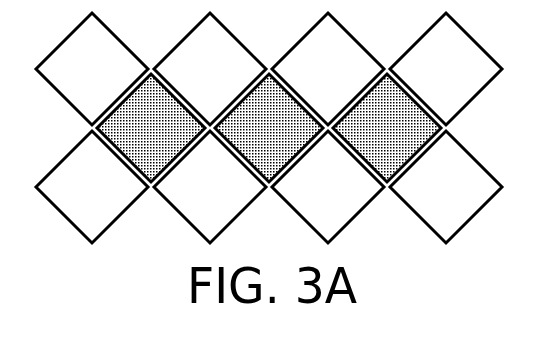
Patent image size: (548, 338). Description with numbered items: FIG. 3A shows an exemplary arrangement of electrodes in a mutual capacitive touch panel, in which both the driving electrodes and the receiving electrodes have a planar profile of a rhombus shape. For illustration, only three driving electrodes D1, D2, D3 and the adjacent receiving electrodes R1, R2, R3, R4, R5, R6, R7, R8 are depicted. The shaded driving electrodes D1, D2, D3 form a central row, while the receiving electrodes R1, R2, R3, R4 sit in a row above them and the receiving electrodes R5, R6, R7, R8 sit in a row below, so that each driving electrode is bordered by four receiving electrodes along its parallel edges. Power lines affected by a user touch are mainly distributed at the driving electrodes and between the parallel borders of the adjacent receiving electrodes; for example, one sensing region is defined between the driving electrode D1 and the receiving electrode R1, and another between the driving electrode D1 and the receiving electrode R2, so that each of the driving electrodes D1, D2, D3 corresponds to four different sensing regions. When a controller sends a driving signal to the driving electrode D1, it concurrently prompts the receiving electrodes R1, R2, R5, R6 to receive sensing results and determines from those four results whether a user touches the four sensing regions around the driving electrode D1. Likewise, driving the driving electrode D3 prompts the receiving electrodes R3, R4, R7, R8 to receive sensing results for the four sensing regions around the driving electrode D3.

The receiving electrode R1 is at (92, 69).
The receiving electrode R2 is at (210, 69).
The receiving electrode R3 is at (328, 69).
The receiving electrode R4 is at (446, 69).
The receiving electrode R5 is at (92, 187).
The receiving electrode R6 is at (210, 187).
The receiving electrode R7 is at (328, 187).
The receiving electrode R8 is at (446, 187).
The driving electrode D1 is at (151, 128).
The driving electrode D2 is at (269, 128).
The driving electrode D3 is at (387, 128).